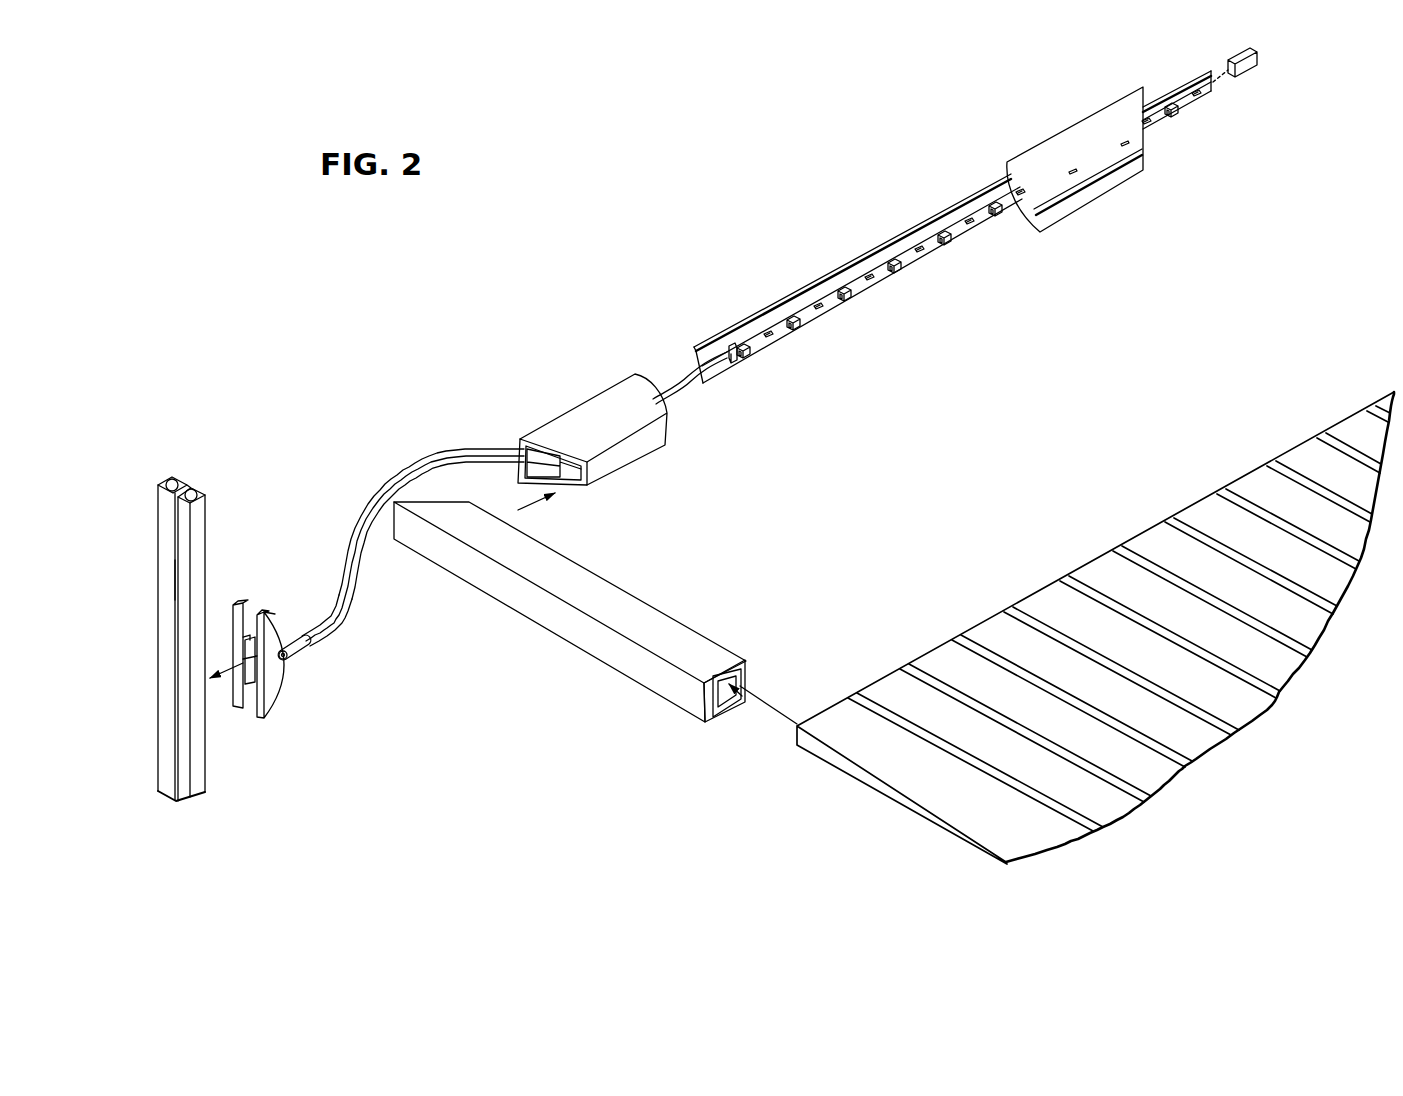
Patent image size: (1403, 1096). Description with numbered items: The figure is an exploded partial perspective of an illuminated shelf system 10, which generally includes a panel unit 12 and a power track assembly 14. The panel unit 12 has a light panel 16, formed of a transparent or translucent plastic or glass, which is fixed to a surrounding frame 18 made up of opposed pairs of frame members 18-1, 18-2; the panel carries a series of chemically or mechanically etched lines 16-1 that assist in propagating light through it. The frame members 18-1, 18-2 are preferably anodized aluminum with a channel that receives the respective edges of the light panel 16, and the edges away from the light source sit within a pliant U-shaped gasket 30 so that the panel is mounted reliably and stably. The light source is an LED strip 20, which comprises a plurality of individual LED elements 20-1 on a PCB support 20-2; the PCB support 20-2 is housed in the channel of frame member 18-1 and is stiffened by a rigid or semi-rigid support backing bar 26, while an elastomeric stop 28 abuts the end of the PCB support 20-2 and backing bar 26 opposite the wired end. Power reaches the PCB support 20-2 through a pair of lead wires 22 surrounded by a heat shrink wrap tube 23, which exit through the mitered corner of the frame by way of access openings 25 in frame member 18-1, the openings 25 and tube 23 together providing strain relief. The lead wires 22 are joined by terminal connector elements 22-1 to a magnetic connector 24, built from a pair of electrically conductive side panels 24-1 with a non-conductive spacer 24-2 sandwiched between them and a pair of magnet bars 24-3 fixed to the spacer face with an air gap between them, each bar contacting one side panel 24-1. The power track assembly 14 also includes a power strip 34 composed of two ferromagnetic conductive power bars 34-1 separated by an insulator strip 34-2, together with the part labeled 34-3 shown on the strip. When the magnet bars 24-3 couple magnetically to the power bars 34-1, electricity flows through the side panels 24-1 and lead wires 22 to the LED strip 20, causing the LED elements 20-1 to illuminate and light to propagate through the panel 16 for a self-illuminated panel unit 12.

The shelf system 10 is at (640, 238).
The panel unit 12 is at (595, 642).
The power track assembly 14 is at (234, 528).
The light panel 16 is at (1095, 628).
The etched lines 16-1 is at (1040, 632).
The frame 18 is at (566, 412).
The frame member 18-1 is at (1054, 144).
The frame member 18-2 is at (495, 591).
The LED strip 20 is at (952, 236).
The LED elements 20-1 is at (885, 252).
The PCB support 20-2 is at (726, 359).
The lead wires 22 is at (338, 623).
The terminal connector elements 22-1 is at (297, 646).
The heat shrink wrap tube 23 is at (401, 476).
The magnetic connector 24 is at (297, 664).
The side panels 24-1 is at (261, 612).
The spacer 24-2 is at (264, 612).
The magnet bars 24-3 is at (240, 646).
The access openings 25 is at (515, 448).
The support backing bar 26 is at (714, 345).
The elastomeric stop 28 is at (1240, 77).
The gasket 30 is at (727, 706).
The power strip 34 is at (172, 640).
The power bars 34-1 is at (163, 507).
The insulator strip 34-2 is at (175, 578).
The post bracket 34-3 is at (252, 682).